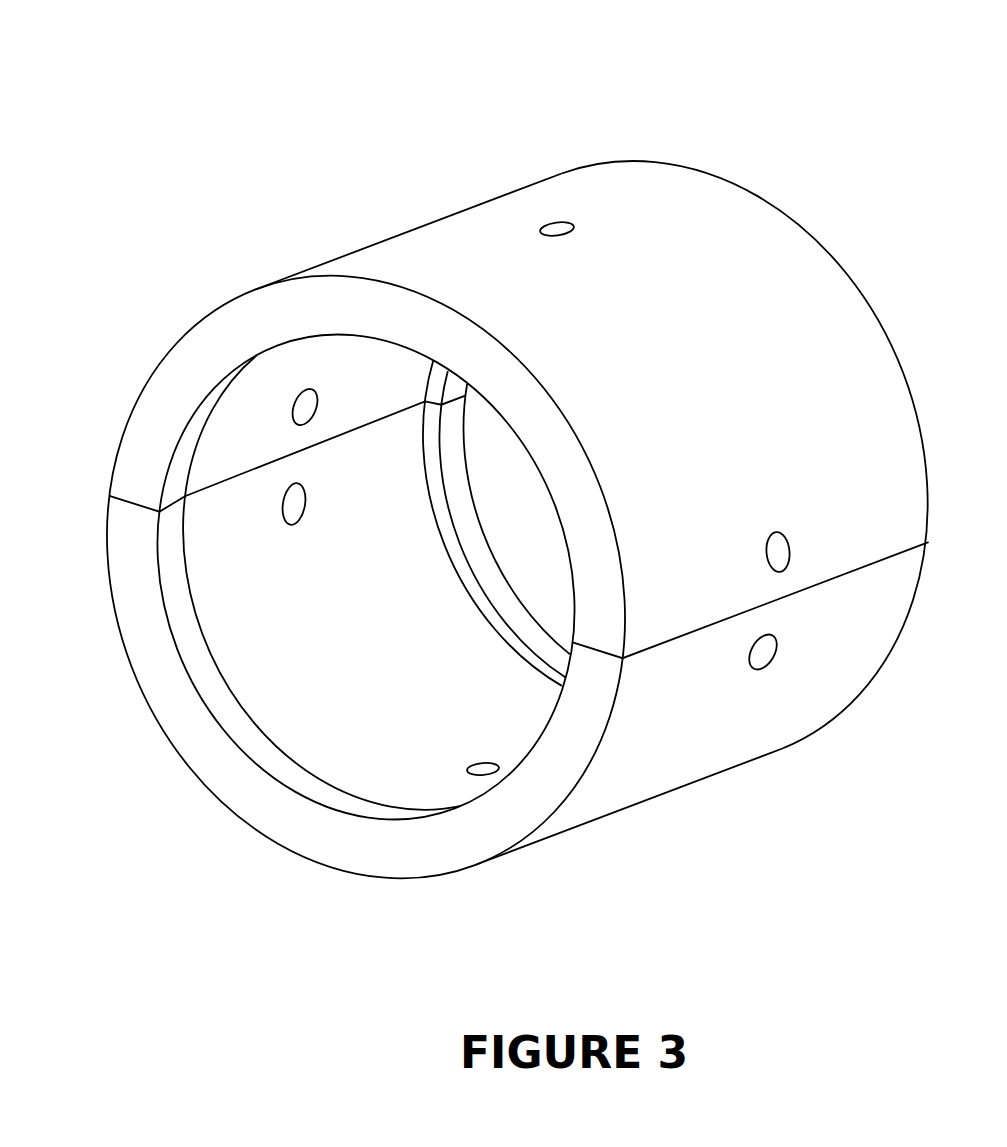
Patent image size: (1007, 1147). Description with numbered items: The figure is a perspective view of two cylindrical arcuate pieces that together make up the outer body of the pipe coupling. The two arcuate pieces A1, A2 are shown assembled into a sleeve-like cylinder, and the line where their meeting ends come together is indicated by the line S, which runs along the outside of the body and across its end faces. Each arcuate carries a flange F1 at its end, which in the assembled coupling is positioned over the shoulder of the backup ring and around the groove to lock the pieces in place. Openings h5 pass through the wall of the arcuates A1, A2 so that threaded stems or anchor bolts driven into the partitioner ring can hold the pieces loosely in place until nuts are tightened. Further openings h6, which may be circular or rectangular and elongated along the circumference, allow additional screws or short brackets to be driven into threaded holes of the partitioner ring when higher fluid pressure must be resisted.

The arcuate piece A1 is at (643, 258).
The arcuate piece A2 is at (747, 722).
The meeting line S is at (132, 507).
The flange F1 is at (555, 507).
The openings h5 is at (557, 224).
The openings h6 is at (313, 402).